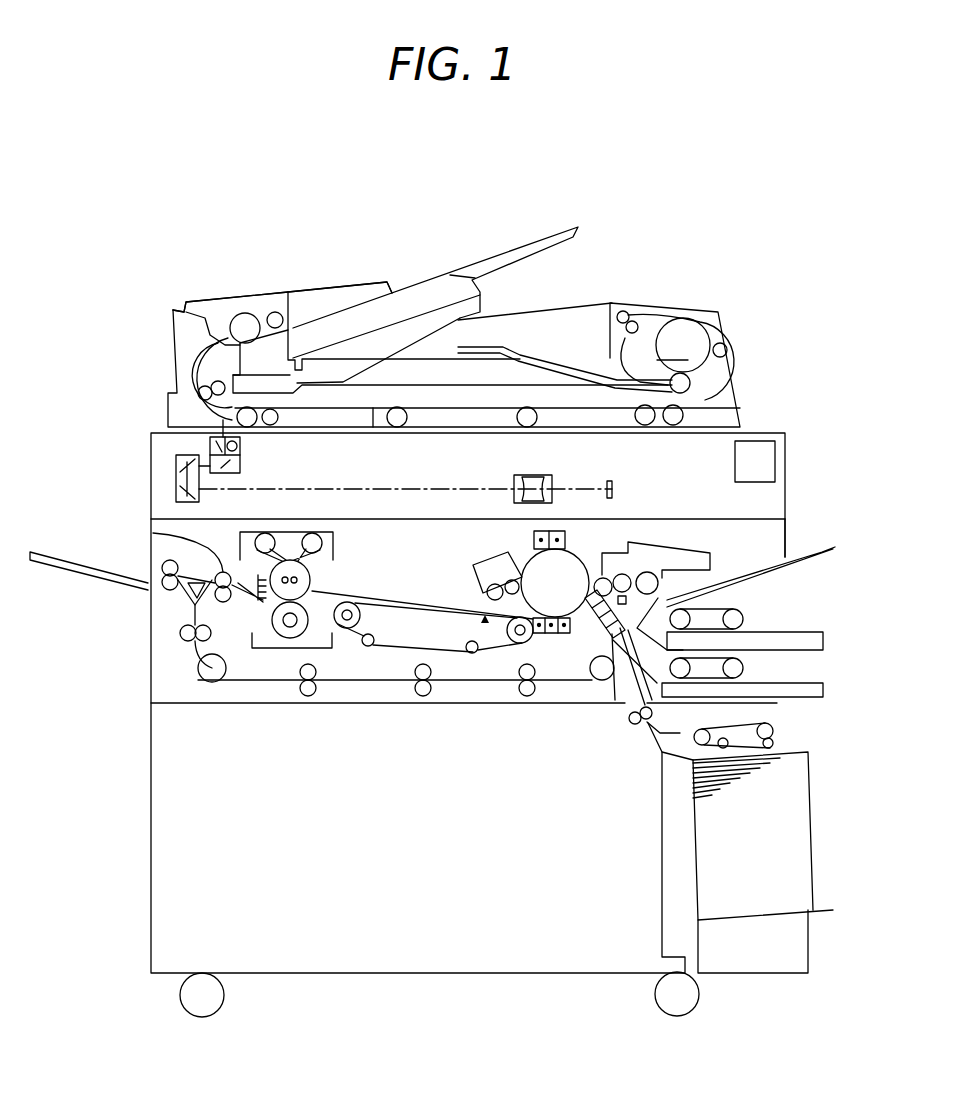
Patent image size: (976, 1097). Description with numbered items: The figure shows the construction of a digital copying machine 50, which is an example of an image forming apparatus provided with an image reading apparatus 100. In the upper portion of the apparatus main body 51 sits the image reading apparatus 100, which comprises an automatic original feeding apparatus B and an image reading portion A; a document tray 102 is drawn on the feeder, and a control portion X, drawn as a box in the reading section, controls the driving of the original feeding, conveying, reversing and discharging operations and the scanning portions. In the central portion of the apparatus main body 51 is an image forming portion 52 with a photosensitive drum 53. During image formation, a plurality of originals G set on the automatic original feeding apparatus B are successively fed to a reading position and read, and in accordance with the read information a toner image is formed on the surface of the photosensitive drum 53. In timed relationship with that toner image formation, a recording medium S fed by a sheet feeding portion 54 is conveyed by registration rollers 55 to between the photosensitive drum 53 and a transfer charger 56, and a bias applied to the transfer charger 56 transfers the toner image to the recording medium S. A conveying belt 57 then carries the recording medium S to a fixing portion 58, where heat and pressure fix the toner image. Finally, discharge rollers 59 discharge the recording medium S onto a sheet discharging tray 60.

The image reading apparatus 100 is at (775, 413).
The digital copying machine 50 is at (845, 322).
The document tray 102 is at (554, 227).
The automatic original feeding apparatus B is at (346, 266).
The originals G is at (542, 348).
The image reading portion A is at (786, 476).
The control portion X is at (767, 450).
The apparatus main body 51 is at (786, 528).
The image forming portion 52 is at (648, 532).
The photosensitive drum 53 is at (533, 563).
The fixing portion 58 is at (270, 642).
The conveying belt 57 is at (390, 648).
The transfer charger 56 is at (567, 636).
The registration rollers 55 is at (607, 650).
The sheet feeding portion 54 is at (723, 602).
The recording medium S is at (815, 638).
The discharge rollers 59 is at (170, 560).
The sheet discharging tray 60 is at (70, 575).